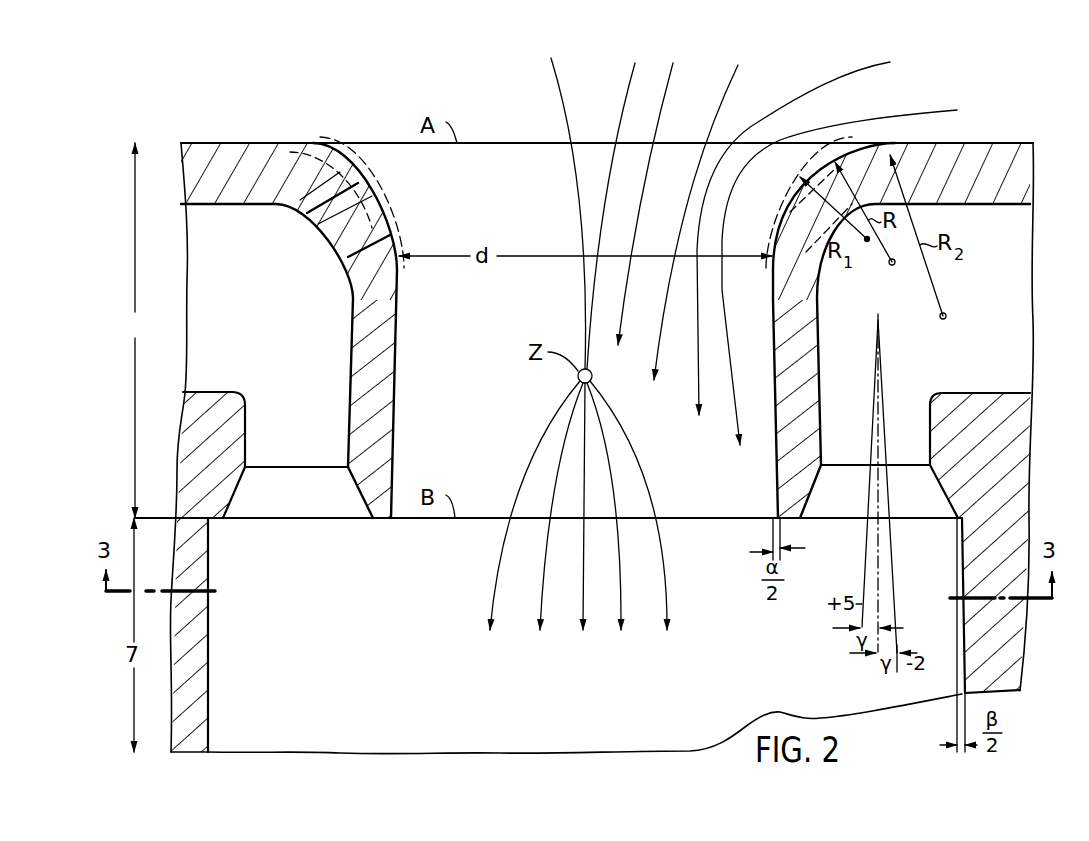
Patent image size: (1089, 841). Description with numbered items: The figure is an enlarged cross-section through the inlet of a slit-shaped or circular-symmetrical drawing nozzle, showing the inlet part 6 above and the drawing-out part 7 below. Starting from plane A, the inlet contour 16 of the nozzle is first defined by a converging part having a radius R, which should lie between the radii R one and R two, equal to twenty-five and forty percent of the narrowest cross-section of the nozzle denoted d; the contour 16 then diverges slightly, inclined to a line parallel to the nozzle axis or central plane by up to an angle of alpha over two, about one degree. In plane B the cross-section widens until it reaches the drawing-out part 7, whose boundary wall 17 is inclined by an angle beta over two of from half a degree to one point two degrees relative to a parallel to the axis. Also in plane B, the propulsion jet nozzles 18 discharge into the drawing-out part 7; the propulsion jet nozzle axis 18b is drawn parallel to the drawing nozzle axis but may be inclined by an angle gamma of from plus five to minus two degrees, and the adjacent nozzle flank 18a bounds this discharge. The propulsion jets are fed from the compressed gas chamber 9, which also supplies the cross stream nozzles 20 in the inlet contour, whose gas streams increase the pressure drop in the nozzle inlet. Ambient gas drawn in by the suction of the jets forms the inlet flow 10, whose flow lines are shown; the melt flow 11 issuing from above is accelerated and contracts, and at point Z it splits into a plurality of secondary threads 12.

The inlet part 6 is at (132, 330).
The drawing-out part 7 is at (396, 709).
The compressed gas chamber 9 is at (1022, 318).
The inlet flow 10 is at (752, 157).
The melt flow 11 is at (580, 193).
The secondary threads 12 is at (540, 602).
The inlet contour 16 is at (395, 386).
The boundary wall 17 is at (209, 723).
The propulsion jet nozzle 18 is at (283, 458).
The groove flank 18a is at (353, 493).
The propulsion jet nozzle axis 18b is at (878, 553).
The cross stream nozzles 20 is at (391, 204).